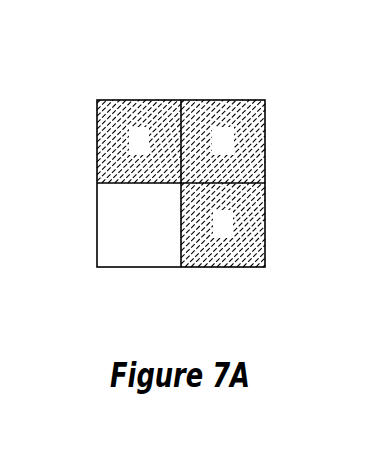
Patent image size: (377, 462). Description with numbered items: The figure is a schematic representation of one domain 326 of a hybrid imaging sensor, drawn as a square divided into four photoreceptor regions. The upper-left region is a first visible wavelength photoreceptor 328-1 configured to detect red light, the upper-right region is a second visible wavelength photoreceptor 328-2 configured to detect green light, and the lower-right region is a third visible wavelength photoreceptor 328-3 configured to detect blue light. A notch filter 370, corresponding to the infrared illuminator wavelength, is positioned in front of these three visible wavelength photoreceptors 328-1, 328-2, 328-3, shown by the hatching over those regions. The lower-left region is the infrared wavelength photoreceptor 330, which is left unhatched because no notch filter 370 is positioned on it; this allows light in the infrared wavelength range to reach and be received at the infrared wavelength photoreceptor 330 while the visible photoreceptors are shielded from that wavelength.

The domain 326 is at (221, 70).
The first visible wavelength photoreceptor 328-1 is at (108, 124).
The second visible wavelength photoreceptor 328-2 is at (254, 158).
The third visible wavelength photoreceptor 328-3 is at (254, 245).
The infrared wavelength photoreceptor 330 is at (106, 218).
The notch filter 370 is at (247, 122).